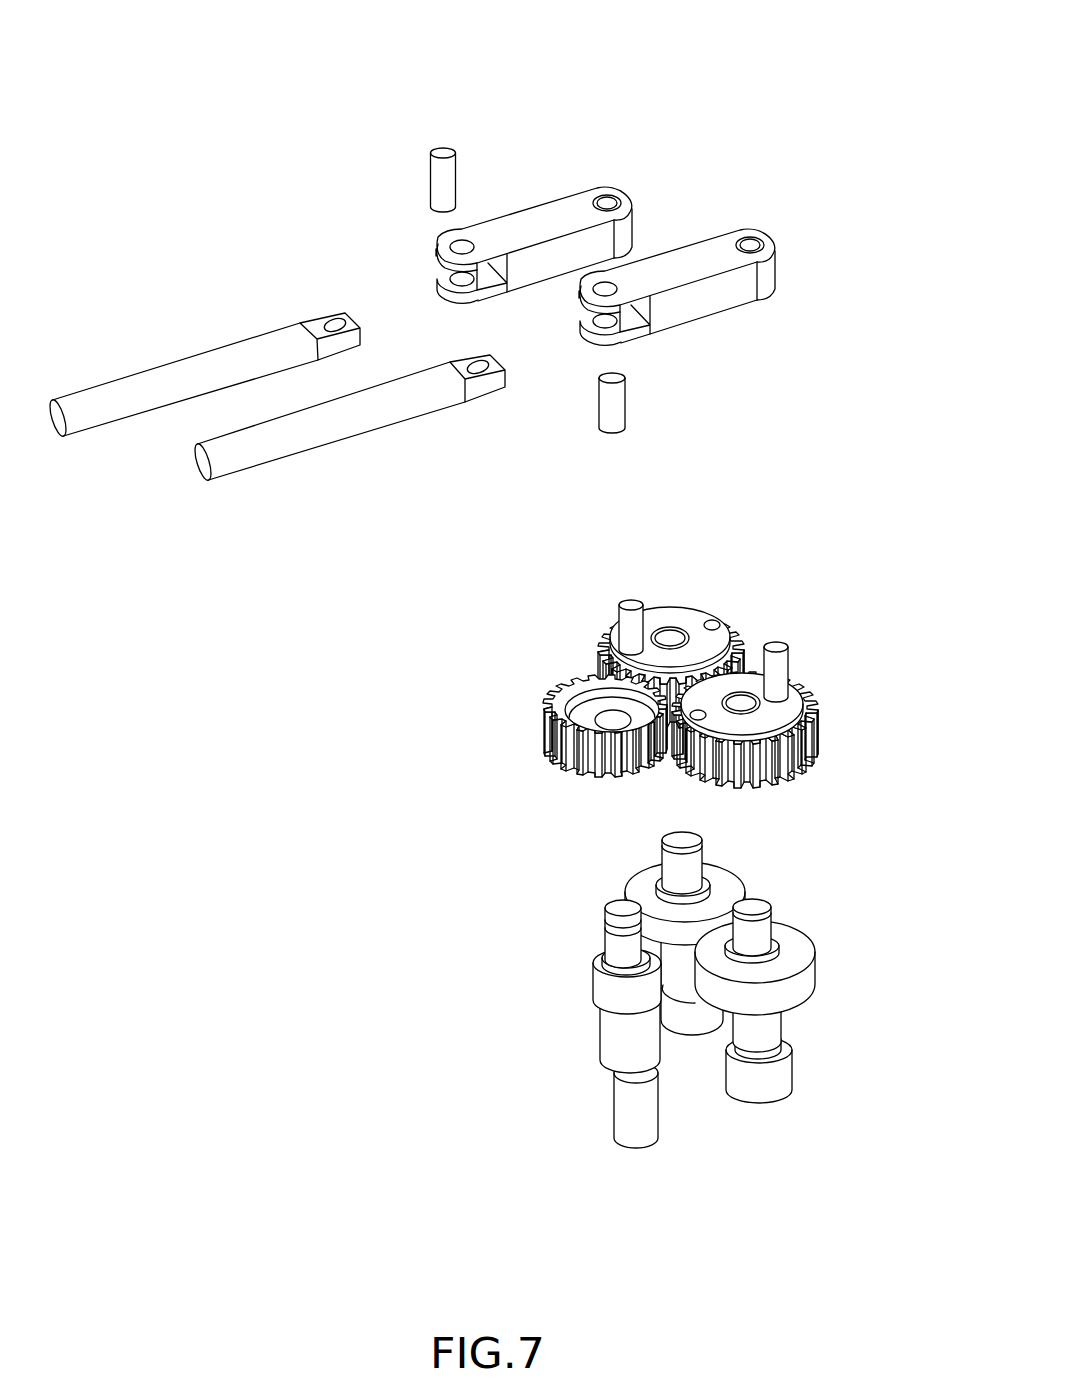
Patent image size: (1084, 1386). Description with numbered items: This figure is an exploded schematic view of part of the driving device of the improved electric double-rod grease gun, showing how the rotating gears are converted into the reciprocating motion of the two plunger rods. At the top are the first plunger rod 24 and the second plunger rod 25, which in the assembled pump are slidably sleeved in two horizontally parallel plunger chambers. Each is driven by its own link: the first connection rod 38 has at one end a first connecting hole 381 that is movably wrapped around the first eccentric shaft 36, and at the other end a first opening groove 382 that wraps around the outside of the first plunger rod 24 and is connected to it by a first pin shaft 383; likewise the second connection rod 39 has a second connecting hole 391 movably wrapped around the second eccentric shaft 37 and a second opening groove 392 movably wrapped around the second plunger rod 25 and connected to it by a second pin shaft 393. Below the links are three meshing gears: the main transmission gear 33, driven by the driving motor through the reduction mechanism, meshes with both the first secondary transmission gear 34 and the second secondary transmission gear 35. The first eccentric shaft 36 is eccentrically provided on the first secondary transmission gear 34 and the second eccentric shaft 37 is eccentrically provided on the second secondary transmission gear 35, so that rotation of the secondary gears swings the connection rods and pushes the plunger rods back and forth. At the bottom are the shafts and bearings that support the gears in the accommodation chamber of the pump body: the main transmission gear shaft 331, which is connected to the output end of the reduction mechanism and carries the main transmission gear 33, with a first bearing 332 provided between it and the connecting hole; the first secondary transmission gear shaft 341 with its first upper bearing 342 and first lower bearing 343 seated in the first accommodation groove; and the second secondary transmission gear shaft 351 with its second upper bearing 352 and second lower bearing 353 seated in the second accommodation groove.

The first plunger rod 24 is at (312, 433).
The second plunger rod 25 is at (210, 367).
The main transmission gear 33 is at (557, 717).
The first secondary transmission gear 34 is at (770, 718).
The second secondary transmission gear 35 is at (695, 613).
The first eccentric shaft 36 is at (778, 650).
The second eccentric shaft 37 is at (628, 600).
The first connection rod 38 is at (725, 300).
The first connecting hole 381 is at (748, 240).
The first opening groove 382 is at (630, 322).
The first pin shaft 383 is at (624, 416).
The second connection rod 39 is at (528, 223).
The second connecting hole 391 is at (607, 203).
The second opening groove 392 is at (443, 273).
The second pin shaft 393 is at (443, 150).
The main transmission gear shaft 331 is at (628, 1100).
The first bearing 332 is at (610, 992).
The first secondary transmission gear shaft 341 is at (762, 929).
The first upper bearing 342 is at (808, 977).
The first lower bearing 343 is at (788, 1080).
The second secondary transmission gear shaft 351 is at (670, 863).
The second upper bearing 352 is at (730, 882).
The second lower bearing 353 is at (690, 1022).